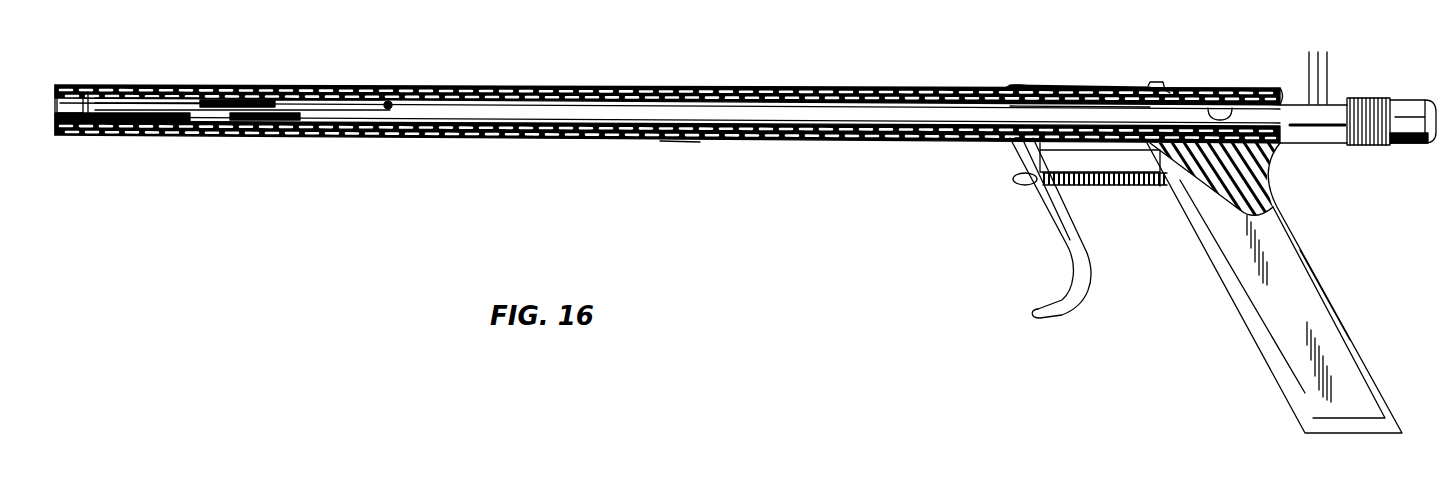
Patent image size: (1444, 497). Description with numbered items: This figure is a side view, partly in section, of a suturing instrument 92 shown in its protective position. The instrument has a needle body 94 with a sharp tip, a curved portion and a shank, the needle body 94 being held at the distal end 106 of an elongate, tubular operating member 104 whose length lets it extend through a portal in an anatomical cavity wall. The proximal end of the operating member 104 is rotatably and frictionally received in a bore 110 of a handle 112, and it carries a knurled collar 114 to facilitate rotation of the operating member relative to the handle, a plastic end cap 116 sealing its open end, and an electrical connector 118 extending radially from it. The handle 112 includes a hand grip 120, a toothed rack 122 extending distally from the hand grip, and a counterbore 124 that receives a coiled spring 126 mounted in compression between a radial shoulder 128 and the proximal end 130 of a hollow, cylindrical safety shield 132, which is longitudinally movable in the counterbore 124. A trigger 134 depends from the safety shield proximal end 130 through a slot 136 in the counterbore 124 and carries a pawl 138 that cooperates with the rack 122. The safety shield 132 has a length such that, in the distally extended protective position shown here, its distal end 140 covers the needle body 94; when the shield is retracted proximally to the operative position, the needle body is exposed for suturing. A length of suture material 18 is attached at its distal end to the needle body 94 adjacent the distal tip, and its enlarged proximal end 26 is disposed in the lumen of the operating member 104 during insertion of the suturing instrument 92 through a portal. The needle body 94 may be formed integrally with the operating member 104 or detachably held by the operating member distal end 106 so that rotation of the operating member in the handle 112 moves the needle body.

The length of suture material 18 is at (292, 112).
The enlarged proximal end 26 is at (388, 116).
The suturing instrument 92 is at (684, 140).
The needle body 94 is at (150, 137).
The tubular operating member 104 is at (556, 88).
The operating member distal end 106 is at (192, 122).
The bore 110 is at (1225, 112).
The handle 112 is at (1340, 298).
The knurled collar 114 is at (1362, 146).
The plastic end cap 116 is at (1437, 64).
The electrical connector 118 is at (1327, 76).
The hand grip 120 is at (1268, 364).
The toothed rack 122 is at (1150, 186).
The counterbore 124 is at (1095, 90).
The coiled spring 126 is at (1058, 90).
The radial shoulder 128 is at (1155, 90).
The safety shield proximal end 130 is at (1020, 88).
The safety shield 132 is at (450, 86).
The trigger 134 is at (1046, 288).
The slot 136 is at (1110, 186).
The pawl 138 is at (1028, 187).
The safety shield distal end 140 is at (88, 90).